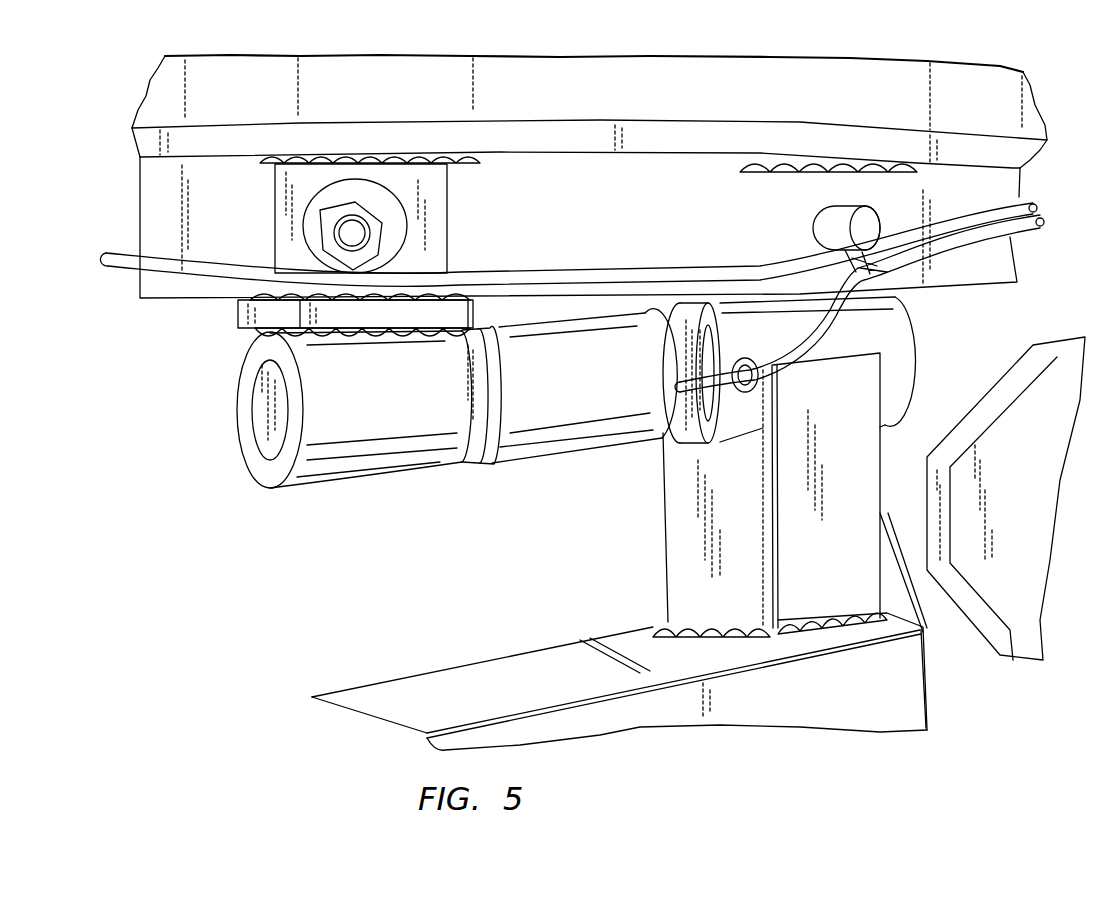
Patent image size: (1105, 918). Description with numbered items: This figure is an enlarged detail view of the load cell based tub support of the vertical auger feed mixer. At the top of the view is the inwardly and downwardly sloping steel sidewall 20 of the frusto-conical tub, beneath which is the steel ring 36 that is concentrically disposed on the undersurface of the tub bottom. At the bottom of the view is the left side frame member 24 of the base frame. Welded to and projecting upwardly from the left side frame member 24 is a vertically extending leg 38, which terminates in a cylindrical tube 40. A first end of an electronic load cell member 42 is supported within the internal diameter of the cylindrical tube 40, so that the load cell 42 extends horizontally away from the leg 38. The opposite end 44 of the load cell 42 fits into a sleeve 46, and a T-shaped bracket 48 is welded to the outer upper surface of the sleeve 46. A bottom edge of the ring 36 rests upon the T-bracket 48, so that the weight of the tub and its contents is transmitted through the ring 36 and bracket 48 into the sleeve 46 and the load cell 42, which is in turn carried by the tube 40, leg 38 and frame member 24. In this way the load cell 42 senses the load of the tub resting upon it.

The sidewall 20 is at (537, 101).
The steel ring 36 is at (200, 216).
The T-shaped bracket 48 is at (290, 245).
The opposite end 44 is at (257, 424).
The sleeve 46 is at (355, 404).
The electronic load cell member 42 is at (562, 393).
The cylindrical tube 40 is at (725, 354).
The vertically extending leg 38 is at (829, 418).
The left side frame member 24 is at (519, 693).